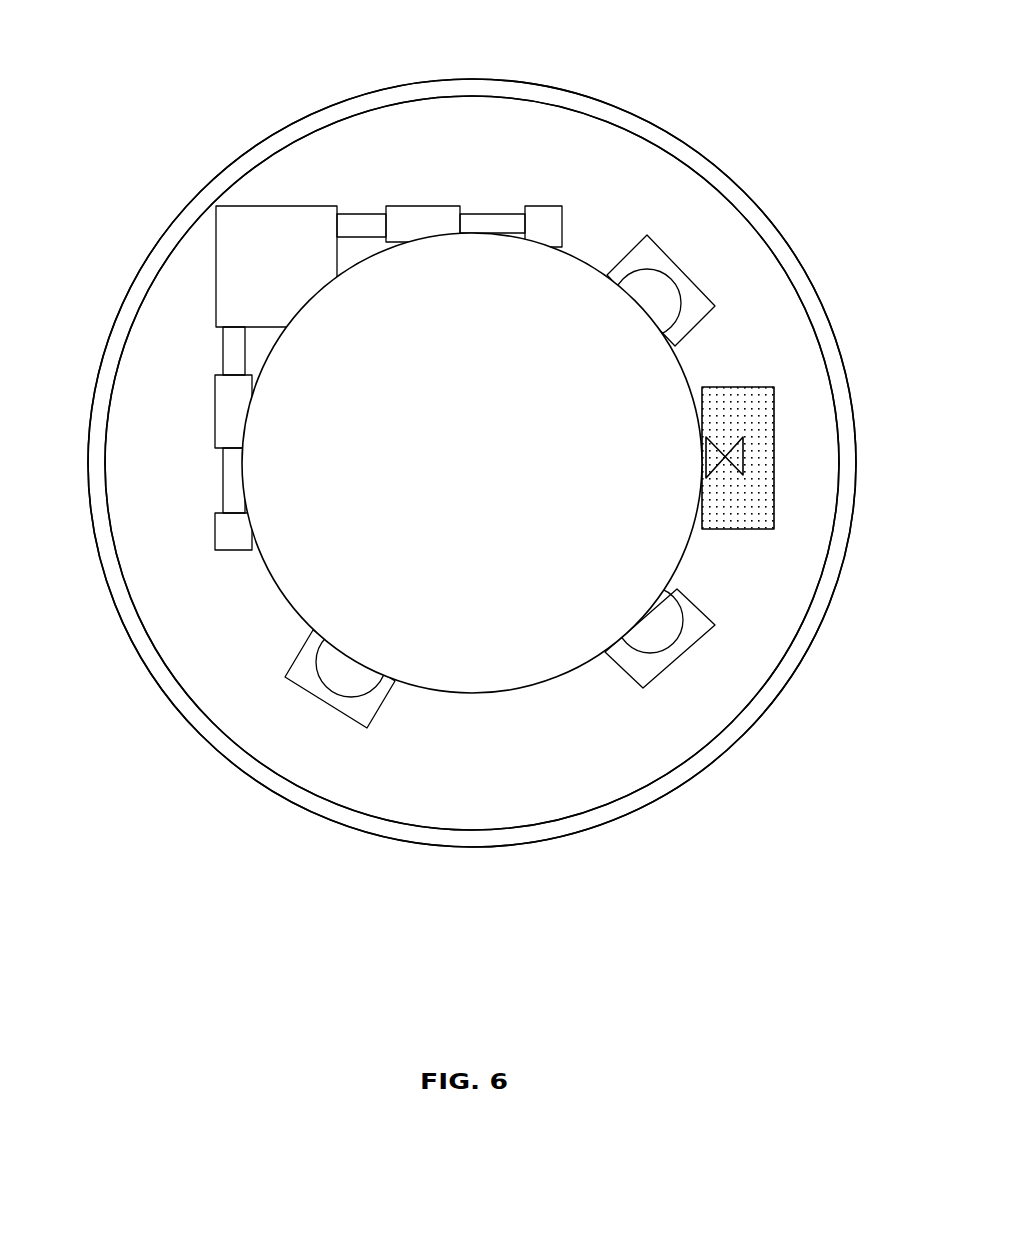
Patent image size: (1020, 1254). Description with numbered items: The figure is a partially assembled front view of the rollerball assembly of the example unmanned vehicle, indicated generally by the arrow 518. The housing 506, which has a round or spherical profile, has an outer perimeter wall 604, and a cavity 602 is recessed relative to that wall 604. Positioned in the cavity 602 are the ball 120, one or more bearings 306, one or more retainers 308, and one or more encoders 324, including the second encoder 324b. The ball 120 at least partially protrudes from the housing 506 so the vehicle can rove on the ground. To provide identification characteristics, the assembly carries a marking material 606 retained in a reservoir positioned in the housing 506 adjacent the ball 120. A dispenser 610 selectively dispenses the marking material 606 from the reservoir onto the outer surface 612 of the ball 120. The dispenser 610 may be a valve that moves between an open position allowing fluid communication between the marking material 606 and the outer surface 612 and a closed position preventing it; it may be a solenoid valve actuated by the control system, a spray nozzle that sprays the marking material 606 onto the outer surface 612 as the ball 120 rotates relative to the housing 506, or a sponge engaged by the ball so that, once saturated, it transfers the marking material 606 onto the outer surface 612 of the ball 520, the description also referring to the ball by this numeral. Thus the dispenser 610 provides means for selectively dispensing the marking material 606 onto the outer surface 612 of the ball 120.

The processing chamber assembly 518 is at (170, 50).
The housing 506 is at (338, 103).
The ball 520 is at (98, 552).
The cavity 602 is at (145, 332).
The wall 604 is at (163, 672).
The marking material 606 is at (747, 422).
The dispenser 610 is at (220, 403).
The outer surface 612 is at (492, 474).
The ball 120 is at (472, 565).
The bearings 306 is at (665, 297).
The retainers 308 is at (648, 253).
The encoders 324 is at (393, 179).
The second encoder 324b is at (405, 218).